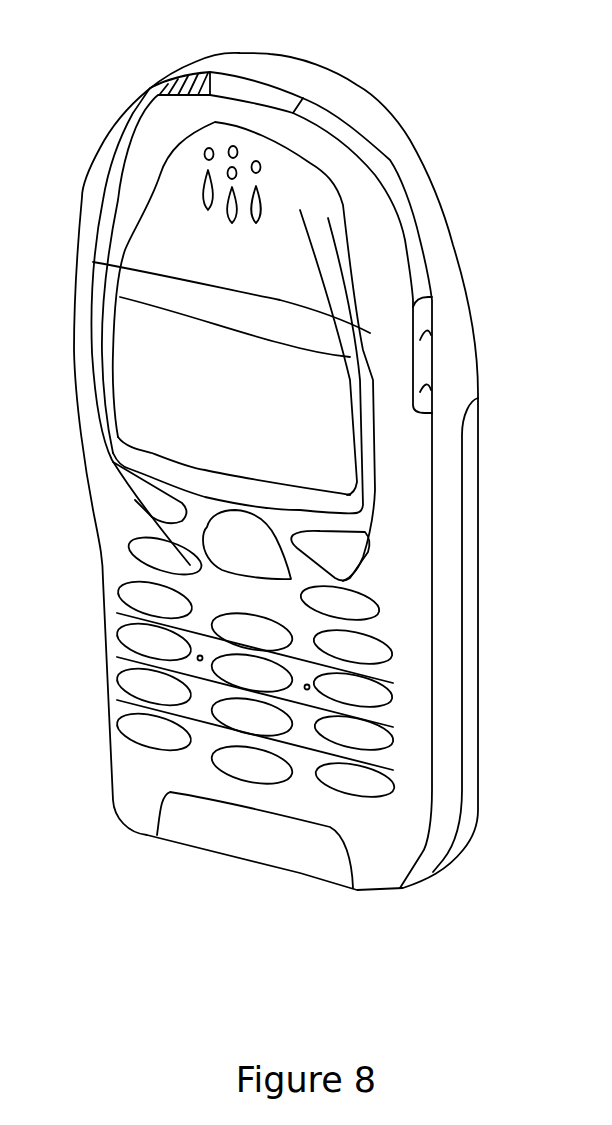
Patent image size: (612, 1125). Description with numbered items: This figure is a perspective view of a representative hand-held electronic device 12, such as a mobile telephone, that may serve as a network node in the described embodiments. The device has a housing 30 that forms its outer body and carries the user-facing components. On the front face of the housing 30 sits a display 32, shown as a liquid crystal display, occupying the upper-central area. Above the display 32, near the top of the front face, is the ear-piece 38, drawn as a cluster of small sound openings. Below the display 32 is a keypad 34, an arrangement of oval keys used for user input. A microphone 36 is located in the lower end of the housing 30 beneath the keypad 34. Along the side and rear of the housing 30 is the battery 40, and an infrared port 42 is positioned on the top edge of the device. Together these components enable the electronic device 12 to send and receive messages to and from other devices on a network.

The mobile communication device 12 is at (405, 64).
The housing 30 is at (442, 222).
The display 32 is at (323, 440).
The keypad 34 is at (350, 787).
The microphone 36 is at (187, 827).
The ear-piece 38 is at (205, 182).
The battery 40 is at (470, 763).
The infrared port 42 is at (257, 90).